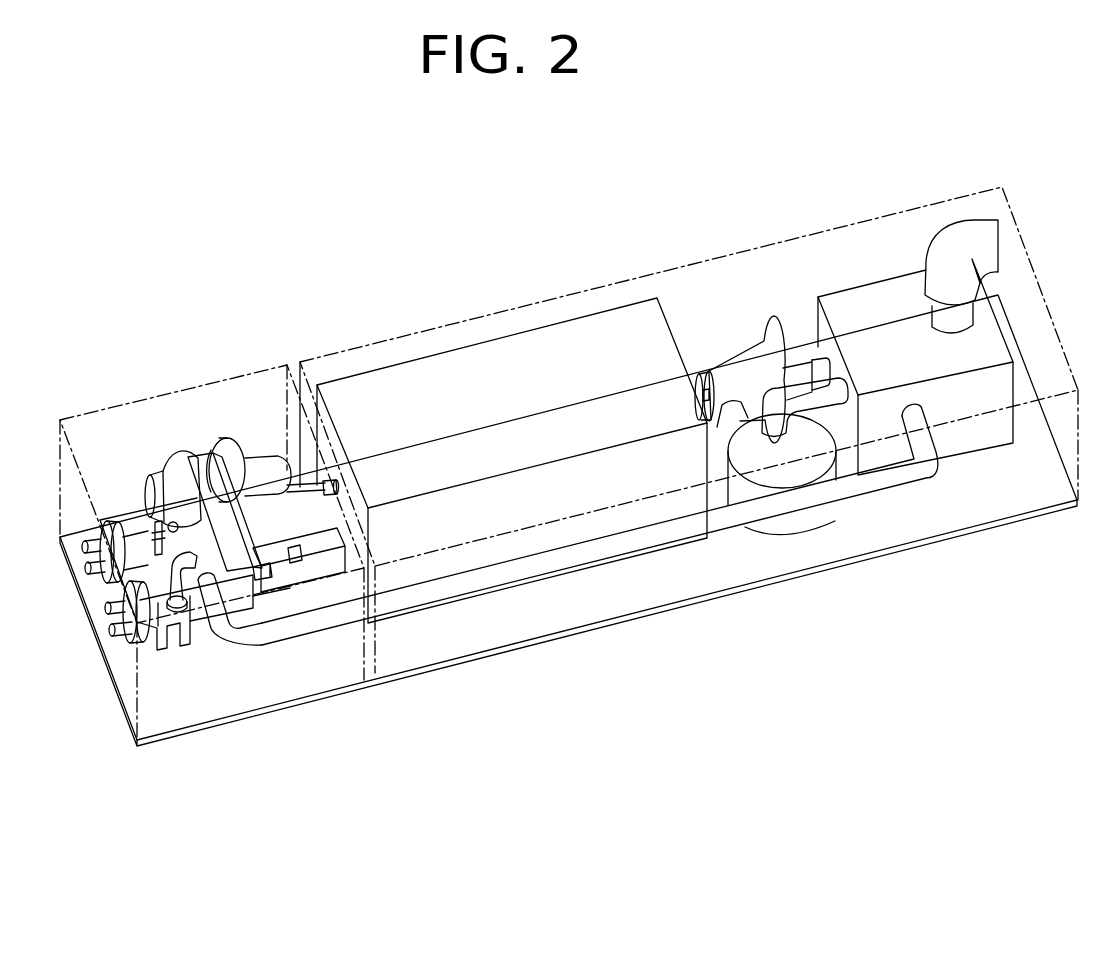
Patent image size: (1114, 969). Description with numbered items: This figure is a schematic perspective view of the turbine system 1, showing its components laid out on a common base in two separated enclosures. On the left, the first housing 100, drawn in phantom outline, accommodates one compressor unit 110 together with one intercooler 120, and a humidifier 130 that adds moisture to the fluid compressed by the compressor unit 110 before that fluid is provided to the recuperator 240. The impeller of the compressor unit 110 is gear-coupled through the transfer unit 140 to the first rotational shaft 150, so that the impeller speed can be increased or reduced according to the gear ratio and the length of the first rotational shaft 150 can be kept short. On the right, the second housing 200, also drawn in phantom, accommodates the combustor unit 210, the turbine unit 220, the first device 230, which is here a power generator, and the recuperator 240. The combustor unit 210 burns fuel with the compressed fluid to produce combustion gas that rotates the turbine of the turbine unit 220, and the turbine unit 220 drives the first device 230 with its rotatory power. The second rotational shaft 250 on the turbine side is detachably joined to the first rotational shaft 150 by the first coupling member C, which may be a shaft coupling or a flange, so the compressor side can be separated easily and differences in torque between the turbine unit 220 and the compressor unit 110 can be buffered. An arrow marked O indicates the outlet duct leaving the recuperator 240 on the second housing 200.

The turbine system 1 is at (881, 112).
The first housing 100 is at (122, 400).
The compressor unit 110 is at (230, 450).
The intercooler 120 is at (270, 527).
The humidifier 130 is at (200, 620).
The transfer unit 140 is at (207, 473).
The first rotational shaft 150 is at (317, 553).
The first coupling member C is at (326, 486).
The second housing 200 is at (462, 312).
The combustor unit 210 is at (795, 527).
The turbine unit 220 is at (745, 360).
The first device 230 is at (573, 337).
The recuperator 240 is at (973, 437).
The second rotational shaft 250 is at (702, 377).
The outlet O is at (1002, 247).